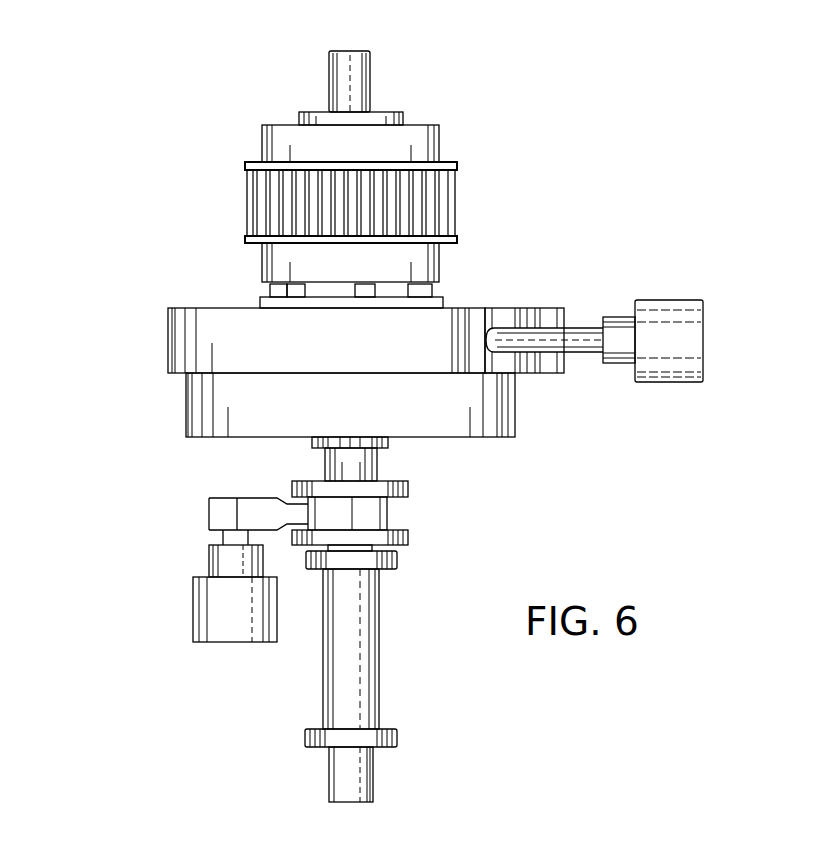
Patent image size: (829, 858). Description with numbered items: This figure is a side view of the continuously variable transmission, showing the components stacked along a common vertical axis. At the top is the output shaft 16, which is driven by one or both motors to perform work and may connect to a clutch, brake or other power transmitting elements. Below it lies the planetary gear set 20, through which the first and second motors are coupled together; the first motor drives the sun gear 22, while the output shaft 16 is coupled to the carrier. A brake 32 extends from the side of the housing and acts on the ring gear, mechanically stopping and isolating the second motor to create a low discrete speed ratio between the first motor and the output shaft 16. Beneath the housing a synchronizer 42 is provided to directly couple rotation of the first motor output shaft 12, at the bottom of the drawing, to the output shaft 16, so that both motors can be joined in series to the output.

The output shaft 16 is at (362, 73).
The planetary gear set 20 is at (197, 415).
The brake 32 is at (548, 308).
The sun gear 22 is at (387, 443).
The synchronizer 42 is at (388, 510).
The first motor output shaft 12 is at (365, 775).